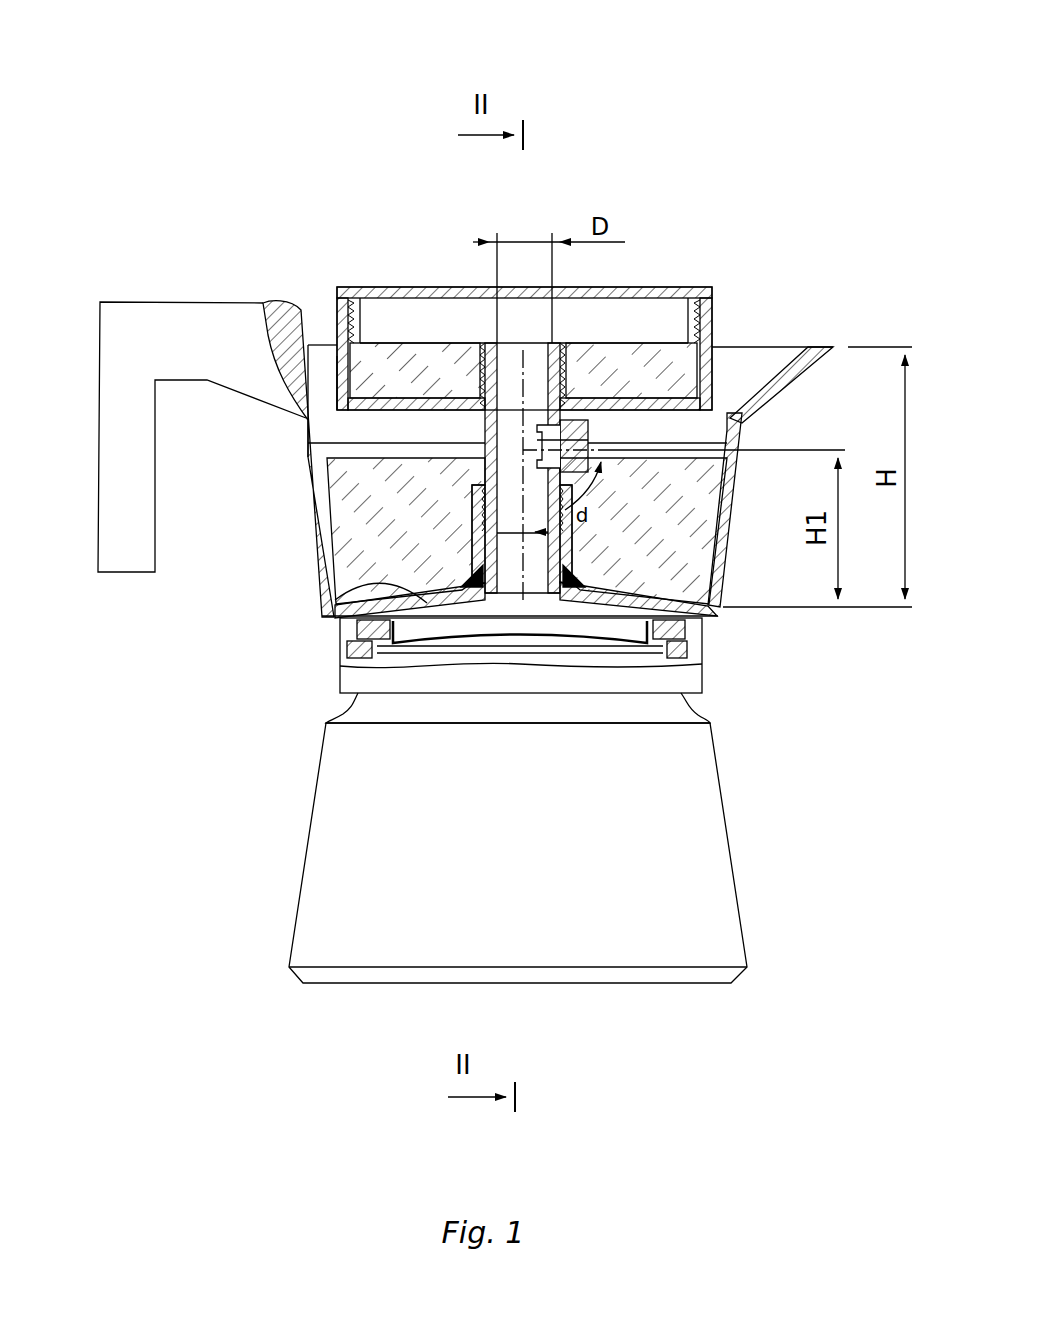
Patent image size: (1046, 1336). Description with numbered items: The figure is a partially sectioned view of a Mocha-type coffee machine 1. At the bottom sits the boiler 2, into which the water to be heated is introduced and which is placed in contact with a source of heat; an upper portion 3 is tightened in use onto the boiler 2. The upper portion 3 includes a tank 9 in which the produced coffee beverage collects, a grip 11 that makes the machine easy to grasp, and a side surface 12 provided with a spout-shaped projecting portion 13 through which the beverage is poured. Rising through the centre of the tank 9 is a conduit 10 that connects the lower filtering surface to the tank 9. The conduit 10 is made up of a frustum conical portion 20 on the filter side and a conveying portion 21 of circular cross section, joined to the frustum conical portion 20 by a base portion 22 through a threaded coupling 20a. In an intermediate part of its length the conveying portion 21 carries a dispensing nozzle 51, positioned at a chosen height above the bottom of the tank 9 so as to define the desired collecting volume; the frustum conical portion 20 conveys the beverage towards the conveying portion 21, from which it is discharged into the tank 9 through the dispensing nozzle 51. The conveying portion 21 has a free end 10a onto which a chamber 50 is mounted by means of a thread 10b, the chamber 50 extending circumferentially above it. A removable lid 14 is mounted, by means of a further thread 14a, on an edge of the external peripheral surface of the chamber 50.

The coffee machine 1 is at (272, 904).
The boiler 2 is at (715, 913).
The upper portion 3 is at (828, 274).
The tank 9 is at (724, 654).
The conduit 10 is at (523, 352).
The end 10a is at (492, 340).
The thread 10b is at (483, 373).
The grip 11 is at (113, 498).
The side surface 12 is at (734, 593).
The projecting portion 13 is at (766, 346).
The removable lid 14 is at (667, 287).
The further thread 14a is at (700, 287).
The frustum conical portion 20 is at (335, 598).
The threaded coupling 20a is at (427, 517).
The conveying portion 21 is at (308, 443).
The base portion 22 is at (572, 557).
The chamber 50 is at (336, 376).
The dispensing nozzle 51 is at (608, 491).